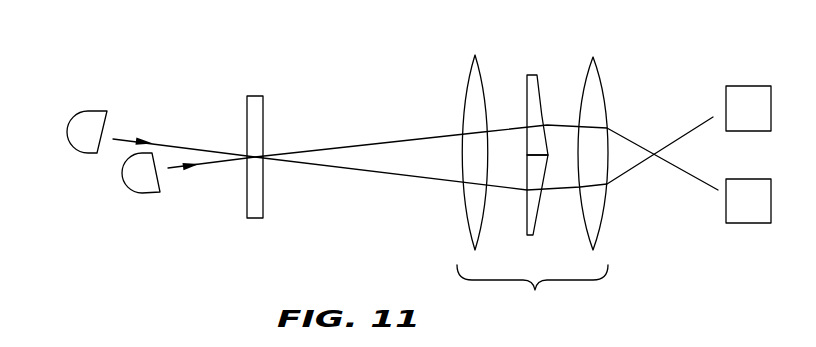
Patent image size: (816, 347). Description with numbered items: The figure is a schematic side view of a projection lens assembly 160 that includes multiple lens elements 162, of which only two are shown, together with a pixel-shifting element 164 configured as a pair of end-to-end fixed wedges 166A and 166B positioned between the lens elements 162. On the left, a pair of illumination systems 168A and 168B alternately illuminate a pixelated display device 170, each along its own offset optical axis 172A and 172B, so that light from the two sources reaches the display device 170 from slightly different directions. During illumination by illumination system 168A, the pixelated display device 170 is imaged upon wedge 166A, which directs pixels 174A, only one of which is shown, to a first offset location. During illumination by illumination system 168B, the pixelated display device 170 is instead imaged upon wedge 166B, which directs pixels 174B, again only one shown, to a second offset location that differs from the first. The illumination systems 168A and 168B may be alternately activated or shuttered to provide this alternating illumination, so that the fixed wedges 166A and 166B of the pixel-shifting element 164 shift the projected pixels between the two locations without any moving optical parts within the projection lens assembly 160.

The projection lens assembly 160 is at (527, 168).
The lens elements 162 is at (475, 61).
The pixel-shifting element 164 is at (530, 140).
The wedge 166A is at (528, 218).
The wedge 166B is at (528, 95).
The illumination system 168A is at (95, 108).
The illumination system 168B is at (123, 168).
The pixelated display device 170 is at (253, 95).
The offset optical axis 172A is at (187, 147).
The offset optical axis 172B is at (220, 162).
The pixels 174A is at (748, 86).
The pixels 174B is at (747, 223).